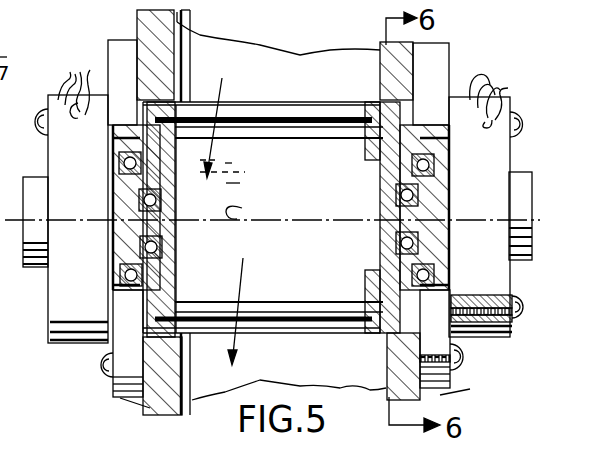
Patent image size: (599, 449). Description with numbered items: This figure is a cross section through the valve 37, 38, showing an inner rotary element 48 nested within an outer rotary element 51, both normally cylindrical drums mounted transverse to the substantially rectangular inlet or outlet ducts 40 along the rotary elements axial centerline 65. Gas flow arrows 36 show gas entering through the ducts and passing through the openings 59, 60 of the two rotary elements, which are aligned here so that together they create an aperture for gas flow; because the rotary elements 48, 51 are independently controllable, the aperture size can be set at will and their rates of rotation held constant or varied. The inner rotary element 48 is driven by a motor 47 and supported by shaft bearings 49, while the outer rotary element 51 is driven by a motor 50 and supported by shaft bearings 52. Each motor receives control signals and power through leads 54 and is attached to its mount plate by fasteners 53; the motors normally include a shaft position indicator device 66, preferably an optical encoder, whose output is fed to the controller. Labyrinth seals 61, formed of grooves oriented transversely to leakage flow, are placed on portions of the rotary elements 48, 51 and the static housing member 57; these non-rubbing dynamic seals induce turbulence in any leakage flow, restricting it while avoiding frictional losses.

The gas flow arrows 36 is at (189, 337).
The gas cushion RCS vent valve 37 is at (328, 209).
The valve 38 is at (440, 45).
The inlet or outlet duct 40 is at (281, 200).
The motor 47 is at (506, 199).
The inner rotary element 48 is at (235, 165).
The shaft bearings 49 is at (196, 223).
The motor 50 is at (92, 206).
The outer rotary element 51 is at (254, 338).
The shaft bearings 52 is at (108, 134).
The fasteners 53 is at (40, 320).
The leads 54 is at (81, 52).
The static housing member 57 is at (140, 407).
The opening 59 is at (304, 139).
The opening 60 is at (240, 107).
The labyrinth seals 61 is at (222, 78).
The rotary elements axial centerline 65 is at (247, 205).
The shaft position indicator device 66 is at (33, 183).